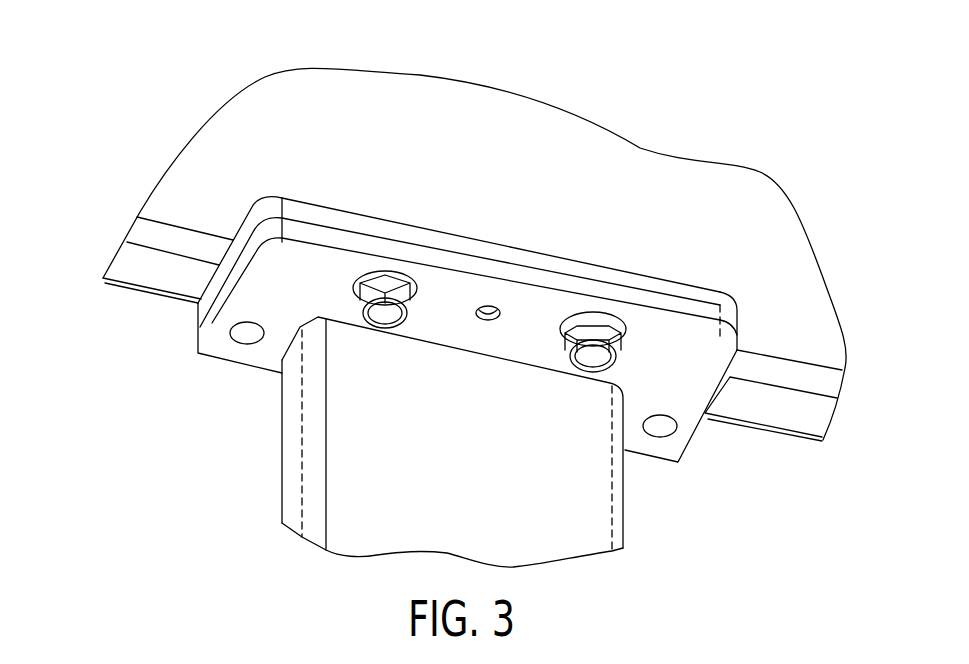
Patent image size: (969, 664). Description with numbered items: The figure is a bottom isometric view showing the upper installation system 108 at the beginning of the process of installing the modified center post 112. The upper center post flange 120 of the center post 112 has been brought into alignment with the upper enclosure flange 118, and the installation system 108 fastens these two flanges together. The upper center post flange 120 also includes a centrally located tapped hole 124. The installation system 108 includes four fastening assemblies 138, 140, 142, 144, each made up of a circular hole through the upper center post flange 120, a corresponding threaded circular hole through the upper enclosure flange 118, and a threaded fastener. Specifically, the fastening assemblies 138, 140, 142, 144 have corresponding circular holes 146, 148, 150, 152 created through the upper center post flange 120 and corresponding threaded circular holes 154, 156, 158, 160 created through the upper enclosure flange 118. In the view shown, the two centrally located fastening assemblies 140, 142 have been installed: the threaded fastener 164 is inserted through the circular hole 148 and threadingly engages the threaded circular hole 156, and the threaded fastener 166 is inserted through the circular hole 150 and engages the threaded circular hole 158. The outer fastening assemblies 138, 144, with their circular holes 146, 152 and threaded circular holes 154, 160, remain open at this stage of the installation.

The upper installation system 108 is at (157, 50).
The center post 112 is at (347, 512).
The upper enclosure flange 118 is at (250, 203).
The upper center post flange 120 is at (260, 267).
The tapped hole 124 is at (493, 331).
The fastening assembly 138 is at (246, 351).
The fastening assembly 140 is at (373, 323).
The fastening assembly 142 is at (638, 365).
The fastening assembly 144 is at (662, 452).
The circular hole 146 is at (203, 326).
The circular hole 148 is at (386, 263).
The circular hole 150 is at (636, 327).
The circular hole 152 is at (667, 434).
The threaded circular hole 154 is at (228, 352).
The threaded circular hole 156 is at (357, 266).
The threaded circular hole 158 is at (615, 334).
The threaded circular hole 160 is at (643, 452).
The threaded fastener 164 is at (393, 314).
The threaded fastener 166 is at (592, 356).